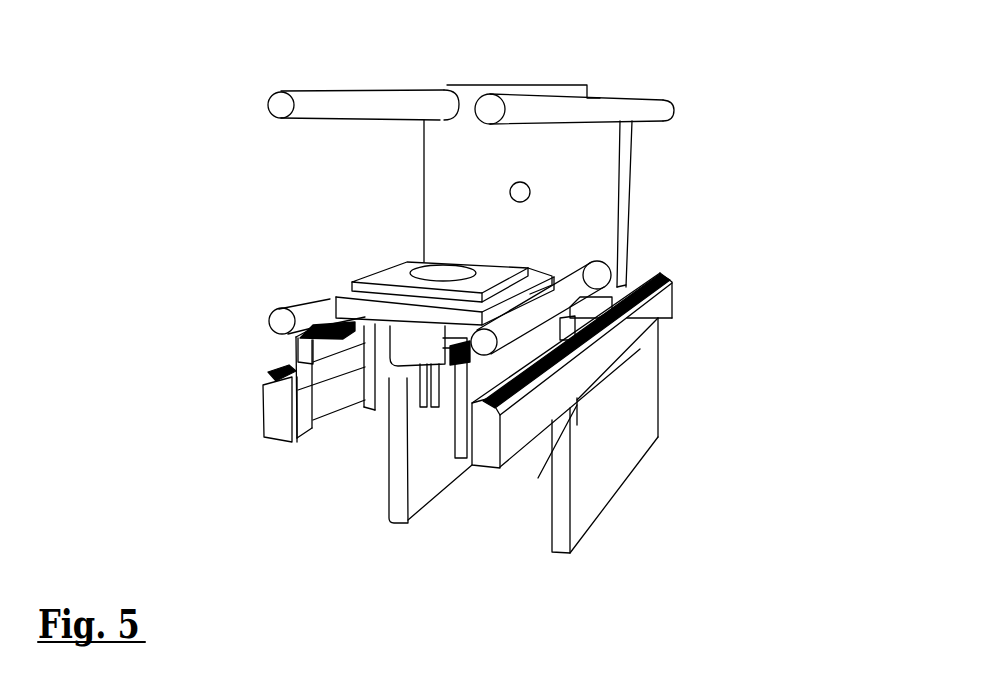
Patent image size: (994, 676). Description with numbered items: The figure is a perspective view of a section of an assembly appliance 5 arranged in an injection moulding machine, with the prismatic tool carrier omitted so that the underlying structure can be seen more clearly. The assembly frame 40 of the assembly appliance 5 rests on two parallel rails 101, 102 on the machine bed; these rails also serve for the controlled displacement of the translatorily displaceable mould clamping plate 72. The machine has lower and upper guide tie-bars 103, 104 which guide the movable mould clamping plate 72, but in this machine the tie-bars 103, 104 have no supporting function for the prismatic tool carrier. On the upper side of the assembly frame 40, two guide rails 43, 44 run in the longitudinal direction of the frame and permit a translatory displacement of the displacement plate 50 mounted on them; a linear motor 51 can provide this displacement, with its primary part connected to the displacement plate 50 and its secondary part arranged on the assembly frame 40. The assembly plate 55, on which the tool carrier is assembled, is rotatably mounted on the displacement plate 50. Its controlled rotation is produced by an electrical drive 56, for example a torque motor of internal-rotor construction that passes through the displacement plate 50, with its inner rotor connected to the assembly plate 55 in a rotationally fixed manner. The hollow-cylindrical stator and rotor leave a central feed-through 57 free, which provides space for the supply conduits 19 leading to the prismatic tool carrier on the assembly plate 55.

The assembly appliance 5 is at (376, 221).
The supply conduits 19 is at (426, 397).
The assembly frame 40 is at (672, 318).
The guide rail 43 is at (263, 413).
The guide rail 44 is at (472, 417).
The displacement plate 50 is at (537, 367).
The linear motor 51 is at (348, 389).
The assembly plate 55 is at (392, 272).
The electrical drive 56 is at (418, 362).
The central feed-through 57 is at (443, 257).
The mould clamping plate 72 is at (637, 147).
The parallel rail 101 is at (282, 378).
The parallel rail 102 is at (672, 272).
The lower guide tie-bar 103 is at (292, 302).
The upper guide tie-bar 104 is at (457, 87).